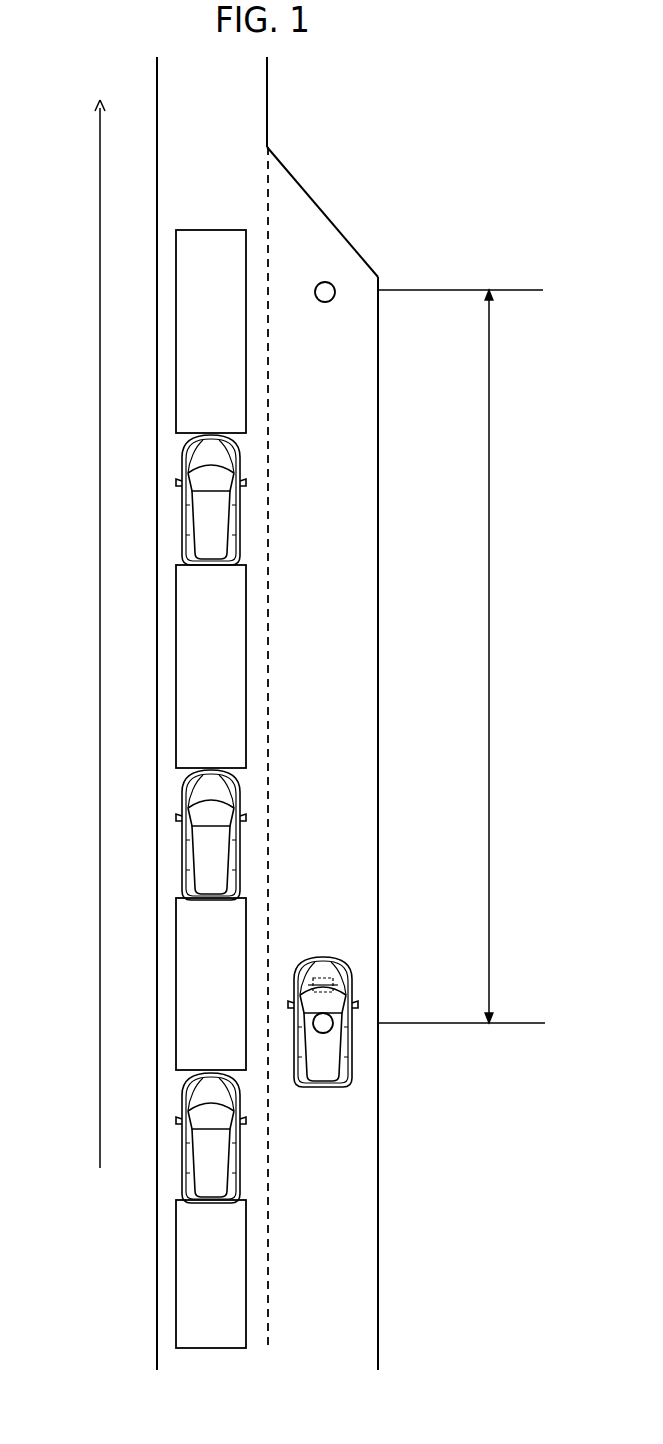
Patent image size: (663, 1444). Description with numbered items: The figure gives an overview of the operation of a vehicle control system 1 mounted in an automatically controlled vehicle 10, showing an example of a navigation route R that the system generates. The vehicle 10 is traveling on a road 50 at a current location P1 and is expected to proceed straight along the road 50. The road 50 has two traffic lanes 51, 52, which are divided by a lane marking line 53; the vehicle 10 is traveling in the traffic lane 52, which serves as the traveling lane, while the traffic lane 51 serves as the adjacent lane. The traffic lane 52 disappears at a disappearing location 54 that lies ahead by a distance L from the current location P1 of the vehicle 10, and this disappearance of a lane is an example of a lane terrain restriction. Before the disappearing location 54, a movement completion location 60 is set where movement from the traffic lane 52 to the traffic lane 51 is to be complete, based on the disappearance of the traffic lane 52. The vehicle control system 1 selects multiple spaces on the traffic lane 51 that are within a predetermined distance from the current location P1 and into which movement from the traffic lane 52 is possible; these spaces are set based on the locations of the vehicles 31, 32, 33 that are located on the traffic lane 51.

The vehicle control system 1 is at (373, 1012).
The vehicle 10 is at (337, 1058).
The vehicle 31 is at (213, 468).
The vehicle 32 is at (213, 852).
The vehicle 33 is at (215, 1170).
The road 50 is at (379, 1267).
The traffic lane 51 is at (227, 220).
The traffic lane 52 is at (313, 233).
The lane marking line 53 is at (270, 346).
The disappearing location 54 is at (327, 208).
The movement completion location 60 is at (337, 291).
The current location P1 is at (334, 1022).
The distance L is at (461, 656).
The navigation route R is at (100, 1000).